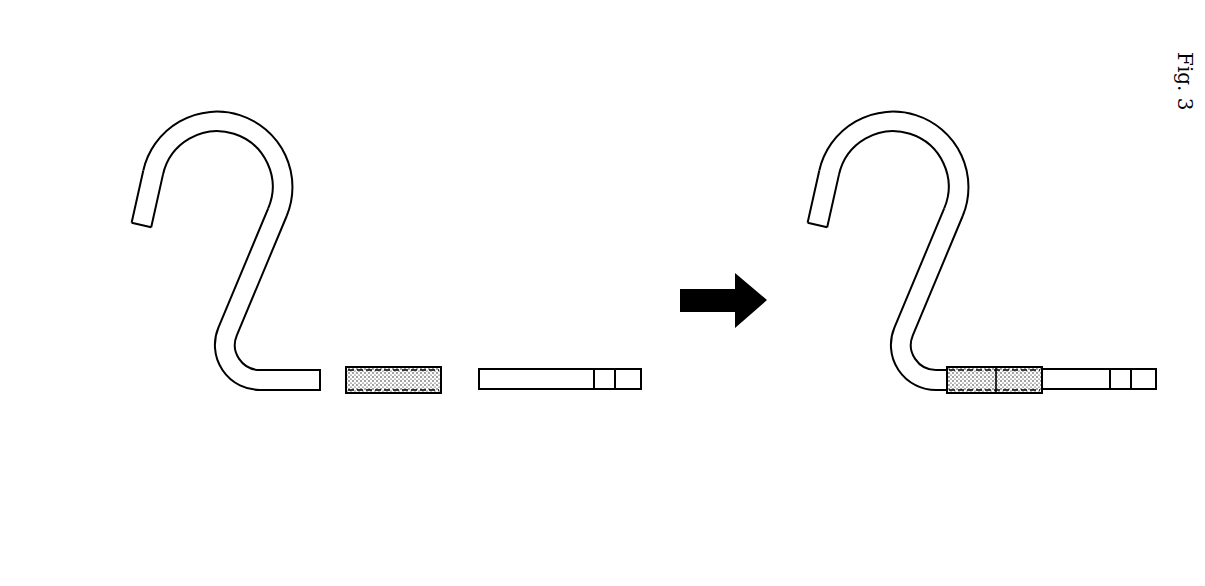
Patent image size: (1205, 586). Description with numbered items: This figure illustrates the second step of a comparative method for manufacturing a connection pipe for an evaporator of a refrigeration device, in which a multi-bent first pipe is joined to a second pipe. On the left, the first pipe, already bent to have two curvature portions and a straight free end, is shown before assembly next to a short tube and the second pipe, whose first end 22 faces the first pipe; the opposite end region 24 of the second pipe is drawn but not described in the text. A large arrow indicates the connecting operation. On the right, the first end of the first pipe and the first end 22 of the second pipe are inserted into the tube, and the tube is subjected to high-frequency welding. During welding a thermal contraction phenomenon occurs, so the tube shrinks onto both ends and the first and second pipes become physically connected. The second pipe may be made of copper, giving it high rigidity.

The first end of the second pipe 22 is at (485, 385).
The end portion of extension member 24 is at (634, 383).